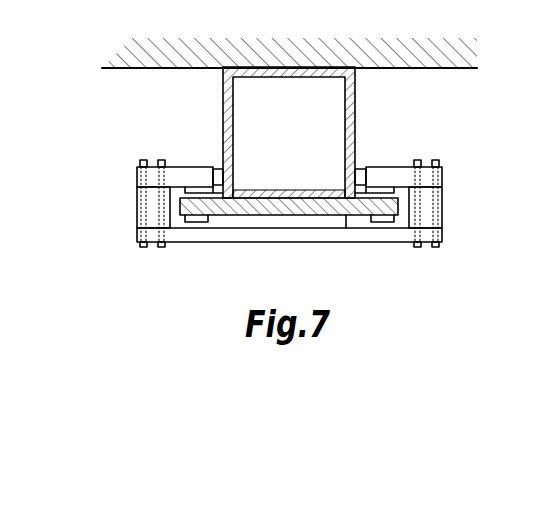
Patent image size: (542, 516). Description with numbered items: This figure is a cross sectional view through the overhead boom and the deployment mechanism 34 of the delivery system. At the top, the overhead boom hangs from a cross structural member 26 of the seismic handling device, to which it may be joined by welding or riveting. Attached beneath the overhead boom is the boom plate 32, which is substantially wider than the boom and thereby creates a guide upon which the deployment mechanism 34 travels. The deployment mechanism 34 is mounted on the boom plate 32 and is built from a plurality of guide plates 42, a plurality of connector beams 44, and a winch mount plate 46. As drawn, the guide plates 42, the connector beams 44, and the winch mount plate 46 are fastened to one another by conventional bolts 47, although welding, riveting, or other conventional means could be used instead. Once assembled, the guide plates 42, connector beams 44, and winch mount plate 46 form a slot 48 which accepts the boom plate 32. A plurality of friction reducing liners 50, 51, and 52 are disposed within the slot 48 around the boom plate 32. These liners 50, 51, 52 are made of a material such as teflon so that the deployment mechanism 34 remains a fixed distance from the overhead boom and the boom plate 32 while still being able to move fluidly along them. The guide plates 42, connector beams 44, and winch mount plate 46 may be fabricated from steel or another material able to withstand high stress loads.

The cross structural member 26 is at (430, 68).
The boom plate 32 is at (250, 215).
The deployment mechanism 34 is at (120, 229).
The guide plate 42 is at (367, 167).
The connector beam 44 is at (442, 203).
The winch mount plate 46 is at (272, 242).
The bolt 47 is at (160, 160).
The slot 48 is at (346, 217).
The friction reducing liner 50 is at (215, 169).
The friction reducing liner 51 is at (403, 222).
The friction reducing liner 52 is at (185, 190).